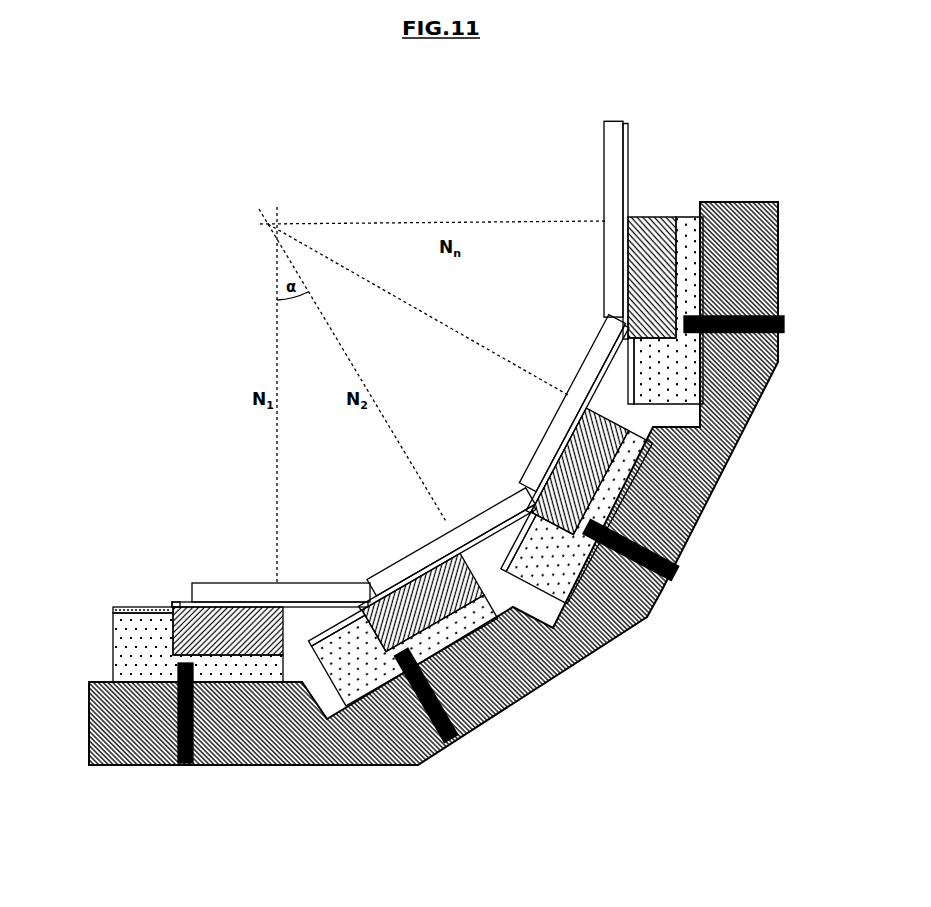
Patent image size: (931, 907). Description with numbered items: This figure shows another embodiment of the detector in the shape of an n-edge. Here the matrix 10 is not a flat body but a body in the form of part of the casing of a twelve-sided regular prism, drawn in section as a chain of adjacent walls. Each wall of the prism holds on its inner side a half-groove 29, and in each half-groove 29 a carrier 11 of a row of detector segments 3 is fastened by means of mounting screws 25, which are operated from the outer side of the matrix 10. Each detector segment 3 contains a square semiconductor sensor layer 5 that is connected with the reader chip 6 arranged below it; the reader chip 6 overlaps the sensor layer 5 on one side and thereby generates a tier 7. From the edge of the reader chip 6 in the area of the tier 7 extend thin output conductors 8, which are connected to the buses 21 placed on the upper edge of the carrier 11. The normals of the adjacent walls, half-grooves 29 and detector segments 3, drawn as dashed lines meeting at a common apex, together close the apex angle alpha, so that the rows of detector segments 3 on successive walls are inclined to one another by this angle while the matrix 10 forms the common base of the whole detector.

The detector segment 3 is at (220, 567).
The sensor layer 5 is at (235, 583).
The reader chip 6 is at (262, 603).
The tier 7 is at (180, 587).
The output conductors 8 is at (167, 603).
The matrix 10 is at (762, 265).
The carrier 11 is at (133, 660).
The buses 21 is at (120, 607).
The mounting screws 25 is at (778, 317).
The half-groove 29 is at (687, 418).